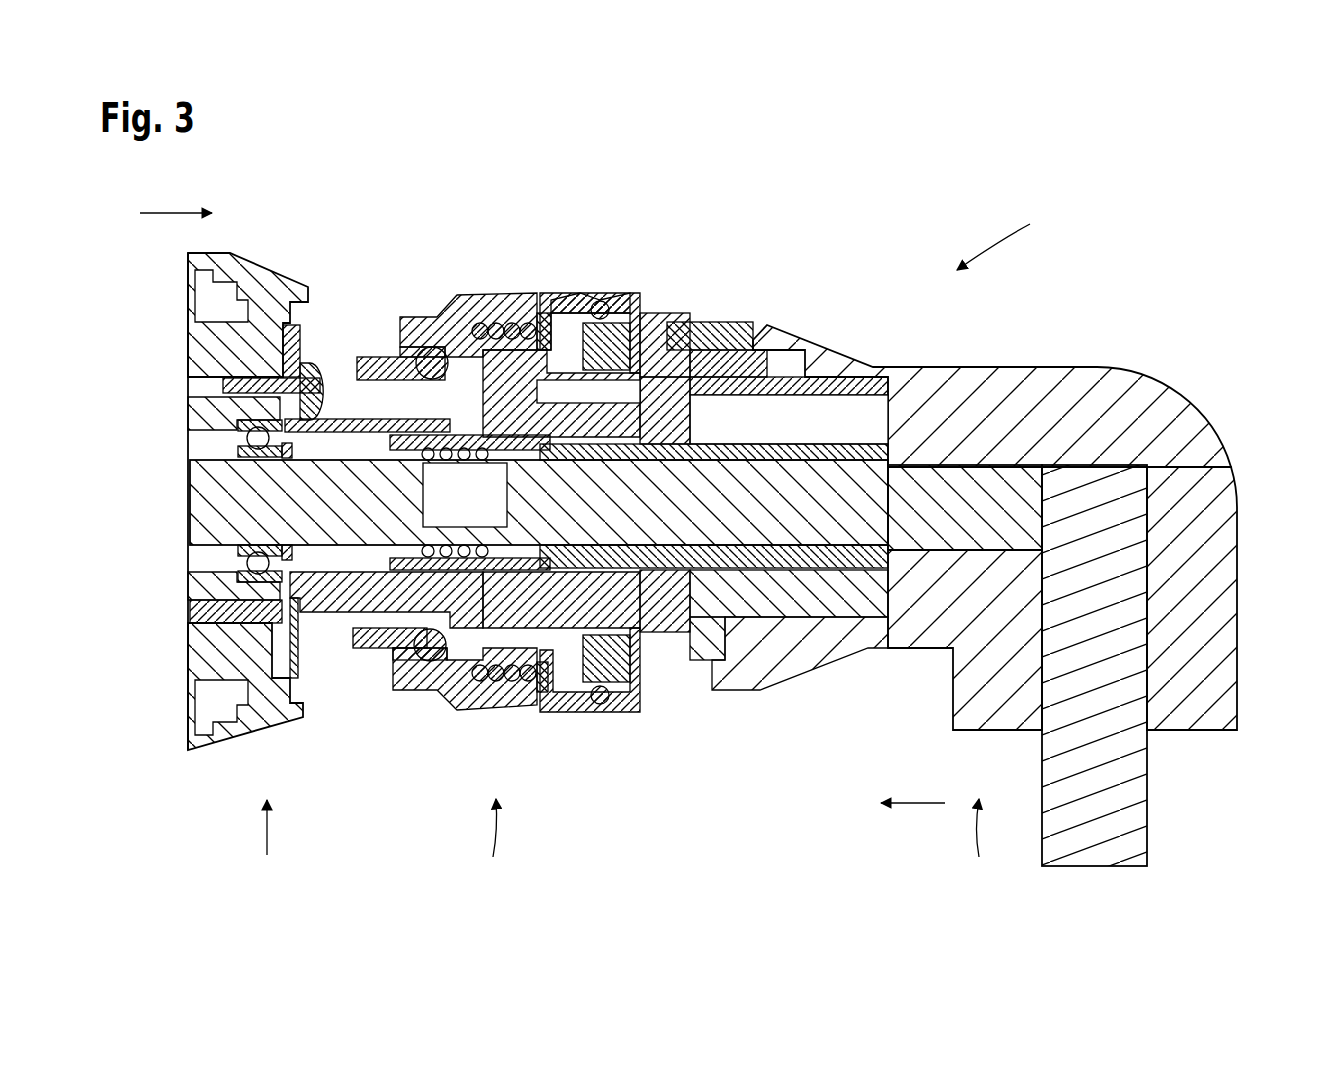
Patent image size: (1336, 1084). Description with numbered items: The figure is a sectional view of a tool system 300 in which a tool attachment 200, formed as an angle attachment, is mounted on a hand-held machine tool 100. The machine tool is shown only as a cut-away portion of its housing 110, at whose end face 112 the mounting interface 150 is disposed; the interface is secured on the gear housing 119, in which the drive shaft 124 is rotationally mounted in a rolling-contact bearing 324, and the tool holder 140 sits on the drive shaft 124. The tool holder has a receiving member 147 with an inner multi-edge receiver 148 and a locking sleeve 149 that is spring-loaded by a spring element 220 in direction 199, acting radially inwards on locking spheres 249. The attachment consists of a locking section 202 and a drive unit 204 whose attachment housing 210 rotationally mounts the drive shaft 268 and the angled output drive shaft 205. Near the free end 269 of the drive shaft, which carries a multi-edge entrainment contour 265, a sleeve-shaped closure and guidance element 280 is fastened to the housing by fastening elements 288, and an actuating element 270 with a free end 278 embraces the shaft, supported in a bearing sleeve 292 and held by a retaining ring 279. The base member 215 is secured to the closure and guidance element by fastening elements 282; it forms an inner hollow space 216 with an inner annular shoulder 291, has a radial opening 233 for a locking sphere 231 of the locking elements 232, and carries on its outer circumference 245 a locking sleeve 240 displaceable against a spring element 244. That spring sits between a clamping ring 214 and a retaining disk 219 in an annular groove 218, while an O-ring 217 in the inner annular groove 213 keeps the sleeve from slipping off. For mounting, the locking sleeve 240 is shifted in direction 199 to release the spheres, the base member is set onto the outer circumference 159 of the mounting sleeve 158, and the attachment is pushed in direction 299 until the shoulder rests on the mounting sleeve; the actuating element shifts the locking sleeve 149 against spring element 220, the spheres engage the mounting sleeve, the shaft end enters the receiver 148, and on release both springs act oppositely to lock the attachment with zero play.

The hand-held machine tool 100 is at (250, 887).
The housing 110 is at (260, 290).
The end face 112 is at (295, 330).
The gear housing 119 is at (215, 661).
The drive shaft 124 is at (215, 517).
The tool holder 140 is at (800, 445).
The receiving member 147 is at (470, 462).
The inner multi-edge receiver 148 is at (470, 495).
The locking sleeve 149 is at (448, 720).
The mounting interface 150 is at (315, 642).
The mounting sleeve 158 is at (370, 423).
The outer circumference 159 is at (343, 642).
The direction 199 is at (176, 213).
The tool attachment 200 is at (1158, 370).
The locking section 202 is at (511, 887).
The drive unit 204 is at (999, 886).
The drive shaft 205 is at (1125, 820).
The attachment housing 210 is at (1196, 443).
The inner annular groove 213 is at (596, 320).
The clamping ring 214 is at (445, 320).
The base member 215 is at (330, 350).
The inner hollow space 216 is at (360, 700).
The O-ring 217 is at (612, 330).
The annular groove 218 is at (555, 700).
The retaining disk 219 is at (543, 692).
The spring element 220 is at (430, 590).
The locking sphere 231 is at (470, 330).
The locking elements 232 is at (493, 325).
The radial opening 233 is at (407, 345).
The locking sleeve 240 is at (636, 294).
The spring element 244 is at (522, 345).
The outer circumference 245 is at (420, 352).
The locking spheres 249 is at (446, 656).
The multi-edge entrainment contour 265 is at (655, 670).
The drive shaft 268 is at (690, 670).
The free end 269 is at (600, 705).
The actuating element 270 is at (780, 560).
The free end 278 is at (580, 640).
The retaining ring 279 is at (800, 385).
The closure and guidance element 280 is at (700, 330).
The fastening elements 282 is at (470, 712).
The fastening elements 288 is at (745, 348).
The inner annular shoulder 291 is at (550, 410).
The bearing sleeve 292 is at (840, 590).
The direction 299 is at (913, 803).
The tool system 300 is at (1072, 218).
The rolling-contact bearing 324 is at (258, 563).